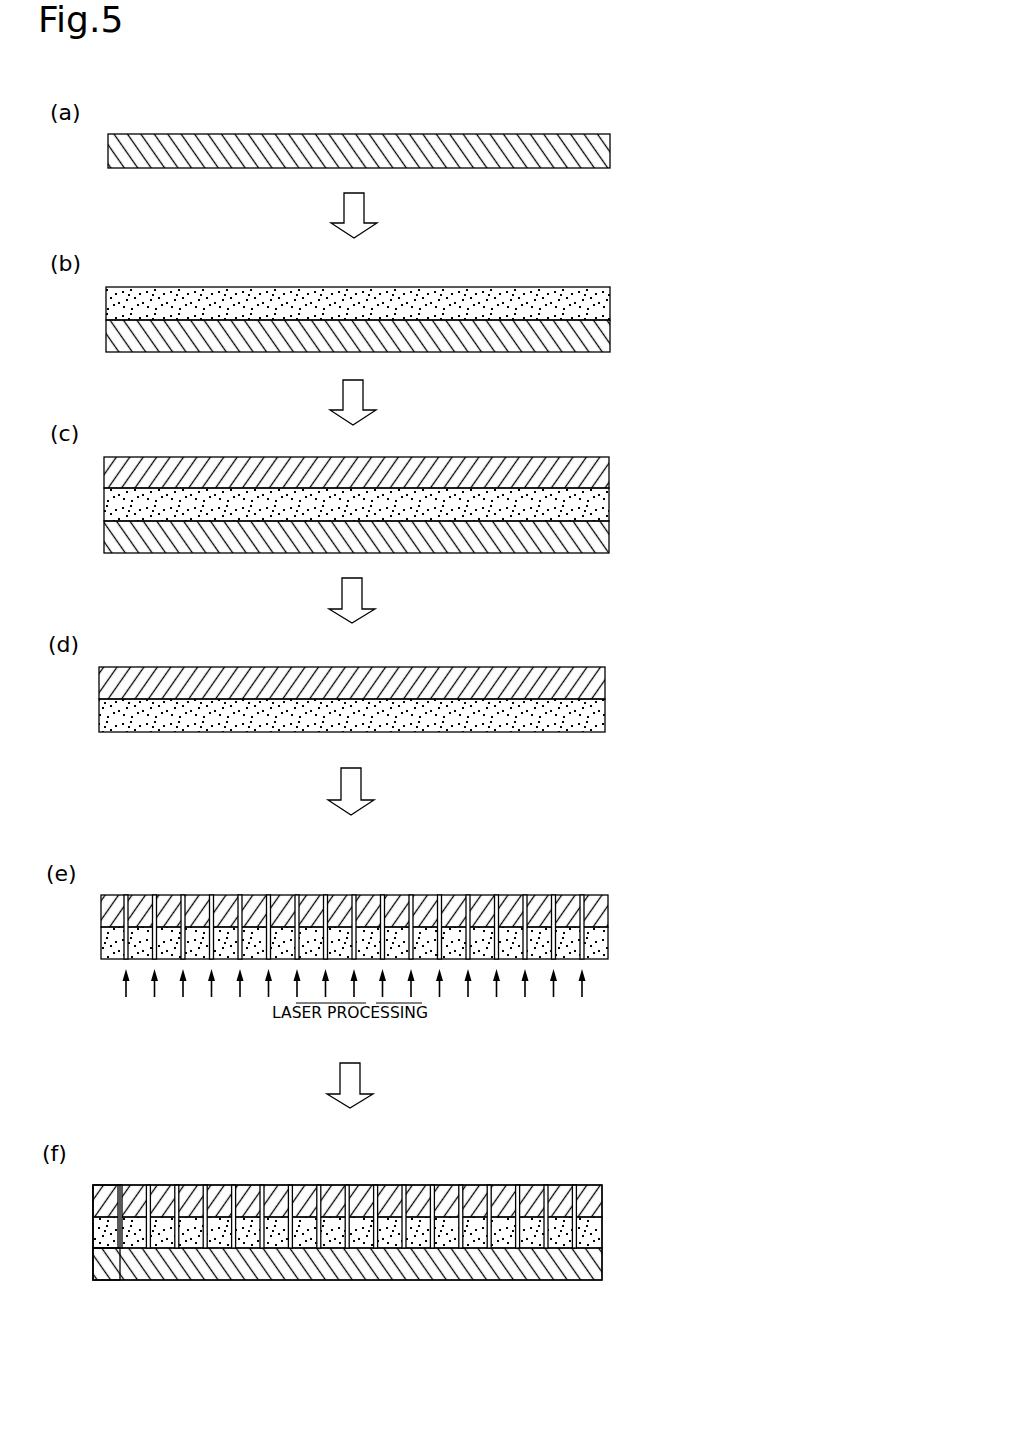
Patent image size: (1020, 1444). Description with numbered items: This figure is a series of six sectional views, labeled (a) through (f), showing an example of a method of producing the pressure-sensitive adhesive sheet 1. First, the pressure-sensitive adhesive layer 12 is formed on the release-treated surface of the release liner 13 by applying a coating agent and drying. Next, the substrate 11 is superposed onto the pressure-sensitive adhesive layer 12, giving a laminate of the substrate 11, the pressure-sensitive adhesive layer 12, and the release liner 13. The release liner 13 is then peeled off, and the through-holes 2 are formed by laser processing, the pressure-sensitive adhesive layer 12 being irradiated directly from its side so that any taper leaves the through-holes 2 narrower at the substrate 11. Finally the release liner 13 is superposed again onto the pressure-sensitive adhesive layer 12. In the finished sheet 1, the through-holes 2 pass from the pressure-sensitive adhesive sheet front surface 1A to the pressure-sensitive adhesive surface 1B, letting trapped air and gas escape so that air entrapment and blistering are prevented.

The pressure-sensitive adhesive sheet 1 is at (592, 1172).
The pressure-sensitive adhesive sheet front surface 1A is at (131, 1185).
The pressure-sensitive adhesive surface 1B is at (127, 1255).
The through-holes 2 is at (468, 895).
The substrate 11 is at (609, 465).
The pressure-sensitive adhesive layer 12 is at (610, 297).
The release liner 13 is at (610, 143).